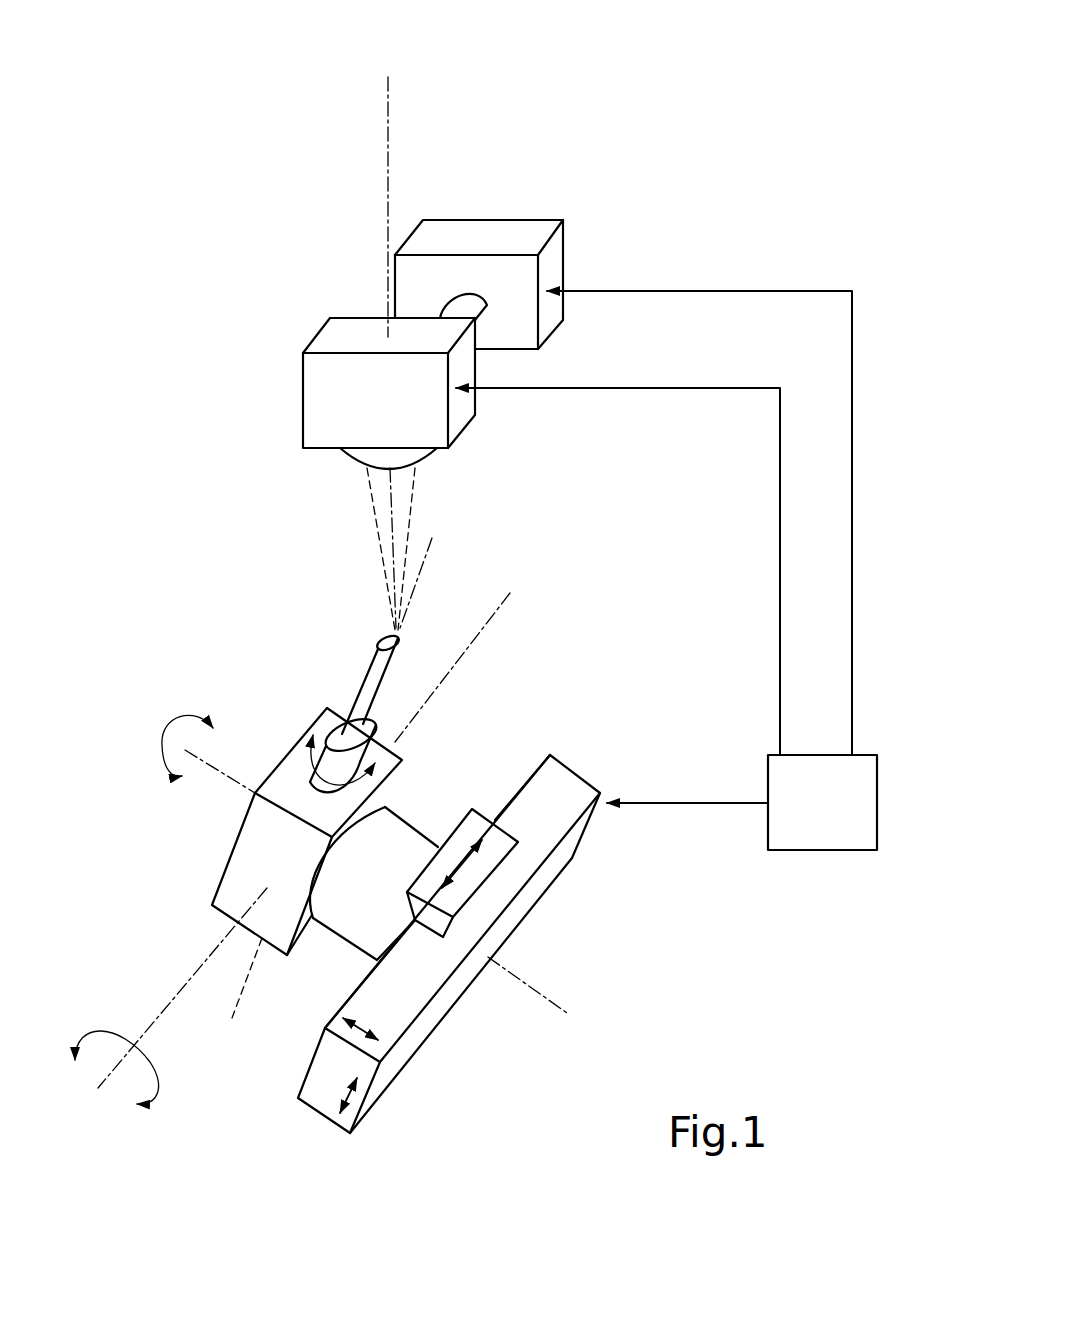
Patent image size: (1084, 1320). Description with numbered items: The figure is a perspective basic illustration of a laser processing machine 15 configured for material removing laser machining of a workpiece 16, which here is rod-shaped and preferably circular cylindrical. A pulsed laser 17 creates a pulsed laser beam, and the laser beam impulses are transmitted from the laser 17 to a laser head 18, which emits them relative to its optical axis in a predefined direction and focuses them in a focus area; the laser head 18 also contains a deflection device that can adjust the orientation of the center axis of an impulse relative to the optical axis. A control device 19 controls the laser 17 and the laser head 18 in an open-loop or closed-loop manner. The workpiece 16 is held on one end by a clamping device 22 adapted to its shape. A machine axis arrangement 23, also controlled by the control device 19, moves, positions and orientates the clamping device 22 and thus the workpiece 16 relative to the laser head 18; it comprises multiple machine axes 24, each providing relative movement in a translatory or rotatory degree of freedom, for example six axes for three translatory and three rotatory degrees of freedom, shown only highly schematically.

The laser processing machine 15 is at (781, 210).
The workpiece 16 is at (370, 673).
The pulsed laser 17 is at (485, 230).
The laser head 18 is at (328, 343).
The control device 19 is at (833, 818).
The clamping device 22 is at (375, 733).
The machine axis arrangement 23 is at (662, 882).
The machine axis 24 is at (483, 800).